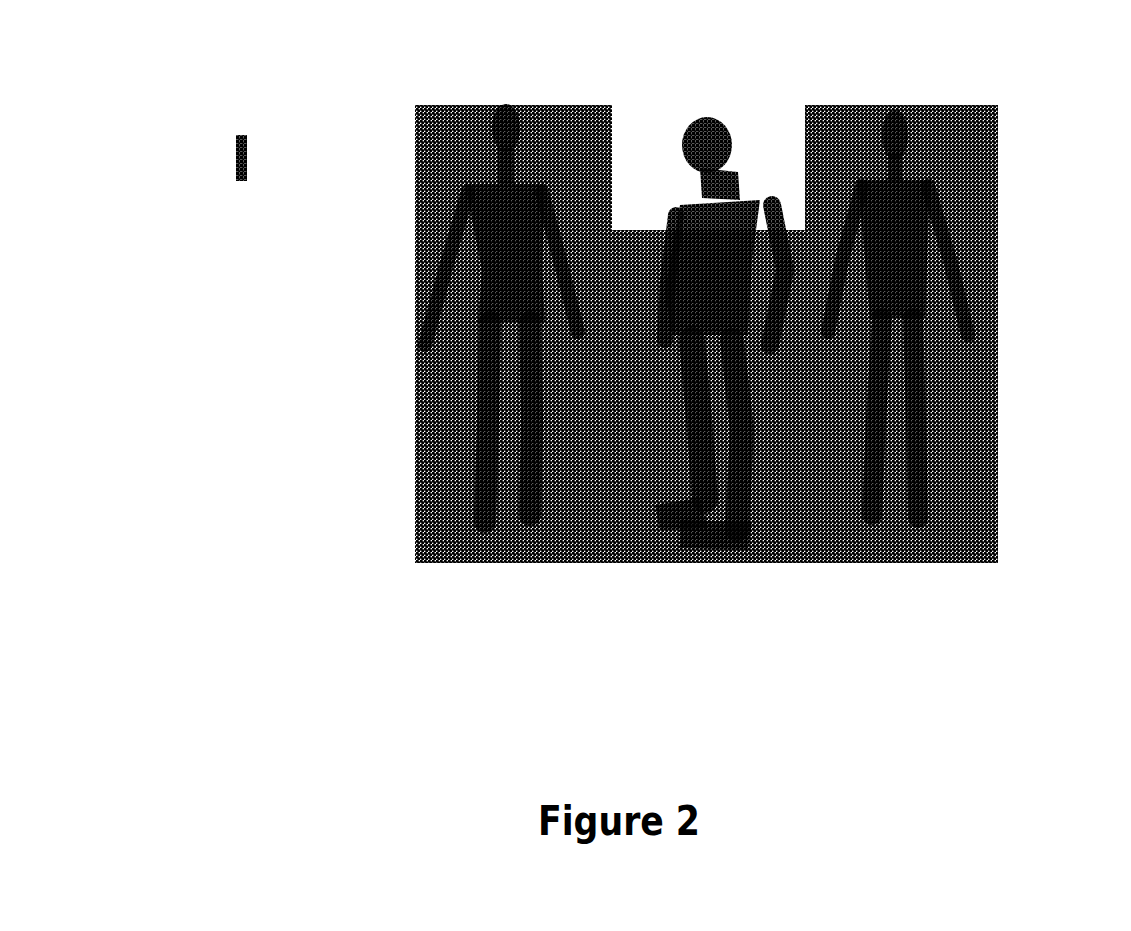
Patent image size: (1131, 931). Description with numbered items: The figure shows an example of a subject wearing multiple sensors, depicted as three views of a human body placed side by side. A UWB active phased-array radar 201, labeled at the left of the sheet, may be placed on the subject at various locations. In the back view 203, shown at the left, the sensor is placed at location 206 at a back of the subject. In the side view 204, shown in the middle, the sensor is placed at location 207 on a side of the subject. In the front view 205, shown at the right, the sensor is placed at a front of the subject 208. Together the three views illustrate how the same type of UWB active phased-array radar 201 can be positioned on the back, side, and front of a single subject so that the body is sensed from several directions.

The UWB active phased-array radar 201 is at (235, 145).
The first human body image (left view) 203 is at (510, 105).
The side view 204 is at (692, 110).
The front view 205 is at (900, 105).
The location at a back of the subject 206 is at (440, 262).
The location on a side of the subject 207 is at (745, 188).
The front of the subject 208 is at (965, 238).